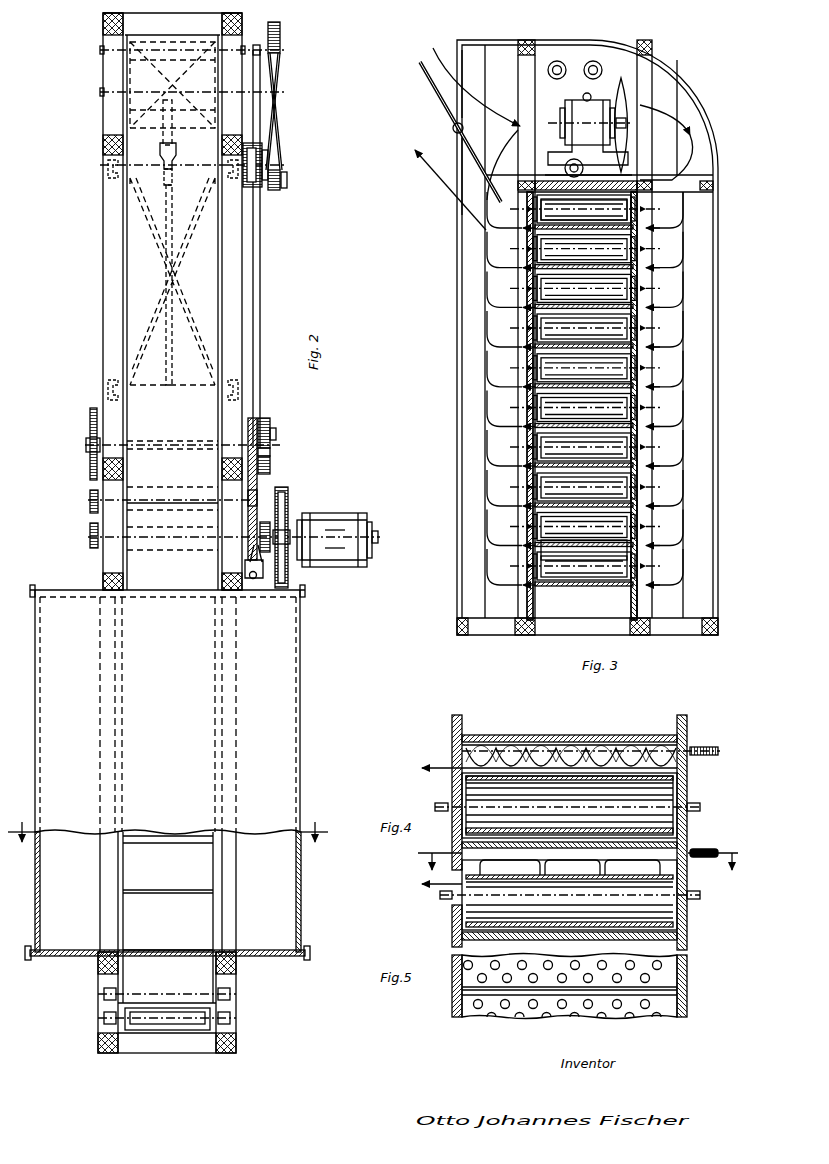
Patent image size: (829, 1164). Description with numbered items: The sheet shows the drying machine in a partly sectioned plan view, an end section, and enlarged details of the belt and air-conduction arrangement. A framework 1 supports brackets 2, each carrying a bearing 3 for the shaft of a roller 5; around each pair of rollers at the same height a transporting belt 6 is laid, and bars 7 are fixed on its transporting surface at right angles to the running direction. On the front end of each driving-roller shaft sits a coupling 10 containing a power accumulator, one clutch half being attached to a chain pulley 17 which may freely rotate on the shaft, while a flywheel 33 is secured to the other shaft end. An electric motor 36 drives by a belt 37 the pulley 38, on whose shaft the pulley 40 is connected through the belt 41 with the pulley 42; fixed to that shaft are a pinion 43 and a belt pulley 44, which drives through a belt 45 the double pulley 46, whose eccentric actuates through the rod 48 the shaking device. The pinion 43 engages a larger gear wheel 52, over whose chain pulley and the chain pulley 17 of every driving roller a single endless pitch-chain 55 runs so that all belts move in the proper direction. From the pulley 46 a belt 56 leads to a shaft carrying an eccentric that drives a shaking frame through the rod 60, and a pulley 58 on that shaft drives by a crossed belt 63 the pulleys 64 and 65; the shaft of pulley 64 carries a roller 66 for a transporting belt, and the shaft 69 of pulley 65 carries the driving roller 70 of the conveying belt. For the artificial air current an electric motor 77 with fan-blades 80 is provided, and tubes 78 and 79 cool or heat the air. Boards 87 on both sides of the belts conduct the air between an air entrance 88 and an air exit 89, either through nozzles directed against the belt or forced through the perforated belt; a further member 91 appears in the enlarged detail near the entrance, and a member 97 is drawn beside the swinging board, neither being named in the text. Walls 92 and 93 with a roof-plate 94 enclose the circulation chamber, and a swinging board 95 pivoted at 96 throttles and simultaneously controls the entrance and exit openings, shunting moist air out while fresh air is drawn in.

In FIG. 2, the framework 1 is at (156, 1046).
In FIG. 3, the framework 1 is at (518, 600).
In FIG. 2, the bracket 2 is at (240, 977).
In FIG. 2, the bearing 3 is at (233, 1028).
In FIG. 3, the bearing 3 is at (640, 290).
In FIG. 4, the roller 5 is at (583, 857).
In FIG. 2, the transporting belt 6 is at (133, 923).
In FIG. 4, the transporting belt 6 is at (465, 776).
In FIG. 5, the transporting belt 6 is at (470, 976).
In FIG. 2, the bar 7 is at (188, 892).
In FIG. 4, the bar 7 is at (675, 777).
In FIG. 5, the bar 7 is at (475, 992).
In FIG. 2, the coupling 10 is at (258, 506).
In FIG. 2, the chain pulley 17 is at (256, 497).
In FIG. 2, the flywheel 33 is at (90, 502).
In FIG. 2, the electric motor 36 is at (340, 567).
In FIG. 2, the belt 37 is at (288, 574).
In FIG. 2, the pulley 38 is at (289, 496).
In FIG. 2, the pulley 40 is at (266, 553).
In FIG. 2, the belt 41 is at (272, 434).
In FIG. 2, the pulley 42 is at (266, 462).
In FIG. 2, the pinion 43 is at (88, 446).
In FIG. 2, the belt pulley 44 is at (268, 452).
In FIG. 2, the belt 45 is at (260, 265).
In FIG. 2, the pulley 46 is at (252, 145).
In FIG. 2, the rod 48 is at (166, 218).
In FIG. 2, the gear wheel 52 is at (92, 430).
In FIG. 2, the pitch-chain 55 is at (258, 430).
In FIG. 2, the belt 56 is at (252, 188).
In FIG. 3, the belt 56 is at (635, 232).
In FIG. 4, the belt 56 is at (668, 800).
In FIG. 2, the pulley 58 is at (284, 188).
In FIG. 2, the rod 60 is at (163, 118).
In FIG. 2, the belt 63 is at (280, 30).
In FIG. 2, the pulley 64 is at (272, 120).
In FIG. 2, the pulley 65 is at (276, 70).
In FIG. 2, the roller 66 is at (130, 82).
In FIG. 2, the shaft 69 is at (258, 47).
In FIG. 2, the driving roller 70 is at (125, 47).
In FIG. 3, the electric motor 77 is at (582, 110).
In FIG. 3, the tube 78 is at (556, 61).
In FIG. 3, the tube 79 is at (565, 160).
In FIG. 3, the fan-blades 80 is at (625, 80).
In FIG. 3, the board 87 is at (528, 500).
In FIG. 4, the board 87 is at (453, 730).
In FIG. 5, the board 87 is at (453, 1010).
In FIG. 4, the air entrance 88 is at (688, 750).
In FIG. 4, the air exit 89 is at (458, 766).
In FIG. 4, the screw conveyor 91 is at (478, 768).
In FIG. 2, the wall 92 is at (264, 956).
In FIG. 2, the wall 93 is at (35, 897).
In FIG. 2, the roof-plate 94 is at (67, 602).
In FIG. 3, the swinging board 95 is at (445, 103).
In FIG. 3, the pivot 96 is at (456, 133).
In FIG. 3, the flap 97 is at (462, 70).